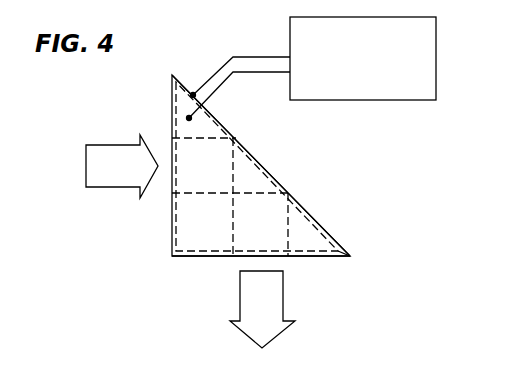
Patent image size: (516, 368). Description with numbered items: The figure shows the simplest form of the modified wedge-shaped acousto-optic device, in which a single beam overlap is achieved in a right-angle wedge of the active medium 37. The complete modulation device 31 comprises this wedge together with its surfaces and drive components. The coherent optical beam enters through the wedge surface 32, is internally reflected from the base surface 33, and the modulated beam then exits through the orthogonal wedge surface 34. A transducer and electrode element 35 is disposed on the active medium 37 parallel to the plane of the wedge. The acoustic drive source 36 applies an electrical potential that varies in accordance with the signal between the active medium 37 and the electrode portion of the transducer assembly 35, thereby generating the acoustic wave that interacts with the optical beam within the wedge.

The modulation device 31 is at (114, 104).
The wedge surface 32 is at (172, 97).
The base surface 33 is at (322, 223).
The orthogonal wedge surface 34 is at (308, 257).
The transducer and electrode element 35 is at (330, 252).
The acoustic drive source 36 is at (436, 60).
The active medium 37 is at (183, 232).